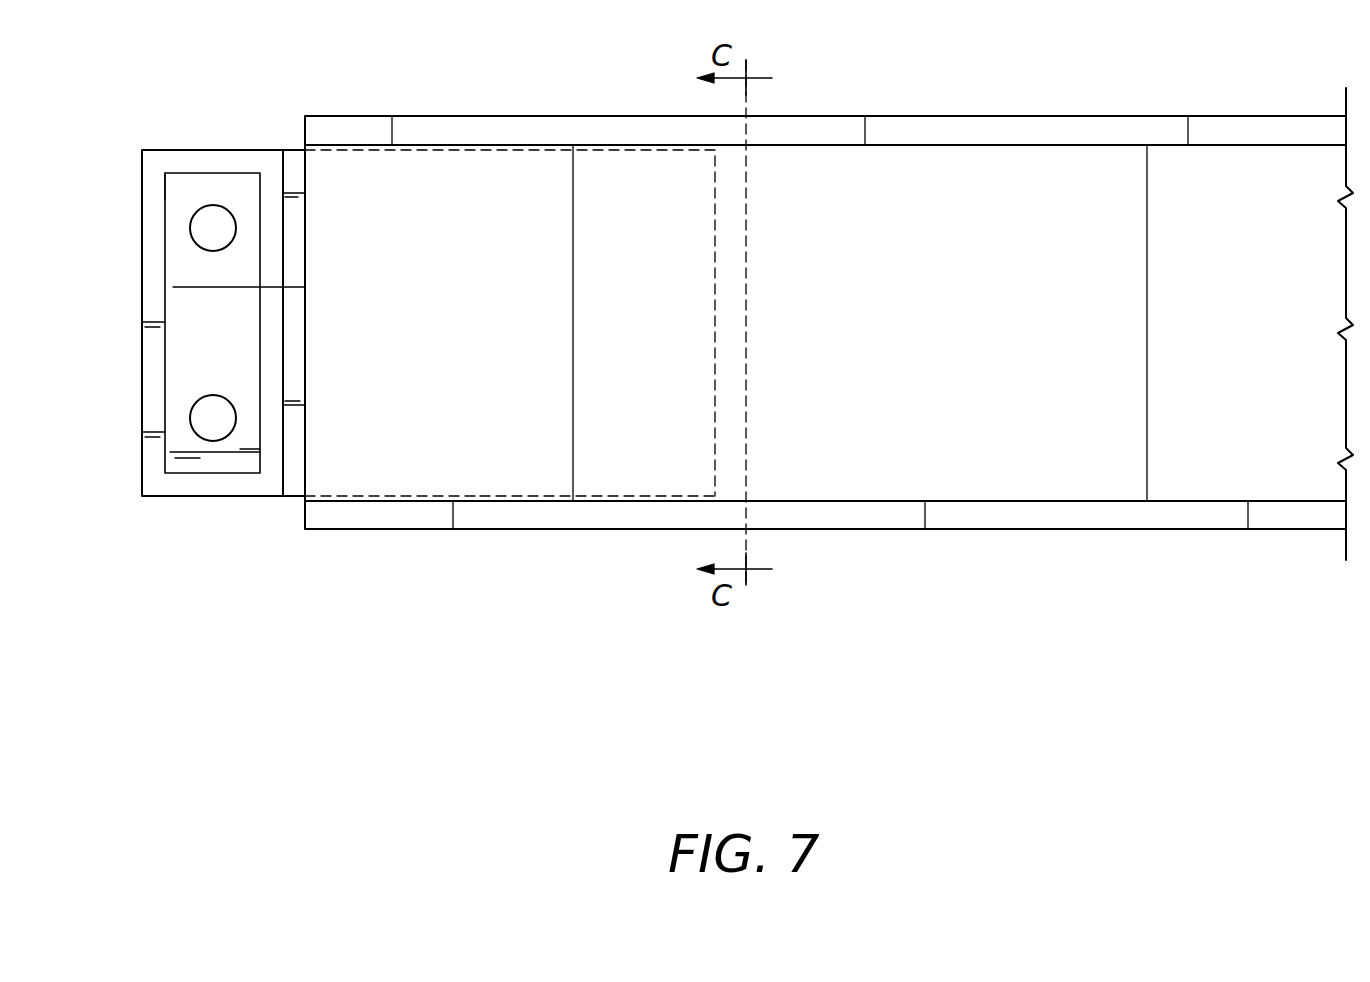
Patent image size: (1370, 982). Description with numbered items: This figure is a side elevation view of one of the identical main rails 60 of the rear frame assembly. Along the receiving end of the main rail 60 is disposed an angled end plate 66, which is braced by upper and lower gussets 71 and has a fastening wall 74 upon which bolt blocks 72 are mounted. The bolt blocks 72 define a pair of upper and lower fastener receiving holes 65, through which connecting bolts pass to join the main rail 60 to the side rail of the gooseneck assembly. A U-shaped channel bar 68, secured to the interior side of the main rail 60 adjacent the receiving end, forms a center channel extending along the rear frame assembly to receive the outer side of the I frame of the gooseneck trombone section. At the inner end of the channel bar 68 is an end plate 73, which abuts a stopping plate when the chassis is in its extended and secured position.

The main rail 60 is at (1088, 488).
The fastener receiving holes 65 is at (190, 229).
The angled end plate 66 is at (208, 150).
The channel bar 68 is at (483, 497).
The gussets 71 is at (270, 162).
The bolt blocks 72 is at (170, 446).
The end plate 73 is at (715, 228).
The fastening wall 74 is at (155, 172).